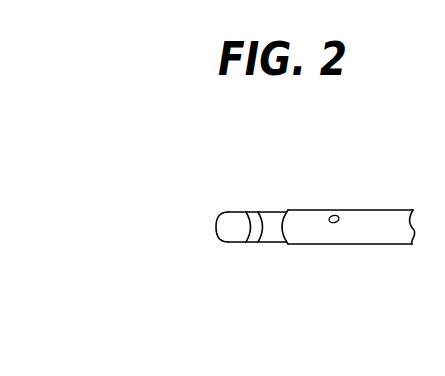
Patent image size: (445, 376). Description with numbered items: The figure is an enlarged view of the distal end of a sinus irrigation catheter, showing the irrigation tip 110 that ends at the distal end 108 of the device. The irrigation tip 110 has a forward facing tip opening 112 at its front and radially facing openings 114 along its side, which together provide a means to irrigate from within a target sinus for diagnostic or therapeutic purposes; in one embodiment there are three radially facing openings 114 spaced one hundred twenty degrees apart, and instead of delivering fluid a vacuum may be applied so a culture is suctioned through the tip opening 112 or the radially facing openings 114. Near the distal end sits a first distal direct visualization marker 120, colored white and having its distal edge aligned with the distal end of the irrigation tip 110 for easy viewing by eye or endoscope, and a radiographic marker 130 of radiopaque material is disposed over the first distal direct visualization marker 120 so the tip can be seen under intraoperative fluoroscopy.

The irrigation tip 110 is at (336, 181).
The distal end 108 is at (217, 222).
The forward facing tip opening 112 is at (214, 233).
The radially facing openings 114 is at (337, 223).
The first distal direct visualization marker 120 is at (236, 225).
The radiographic marker 130 is at (253, 235).